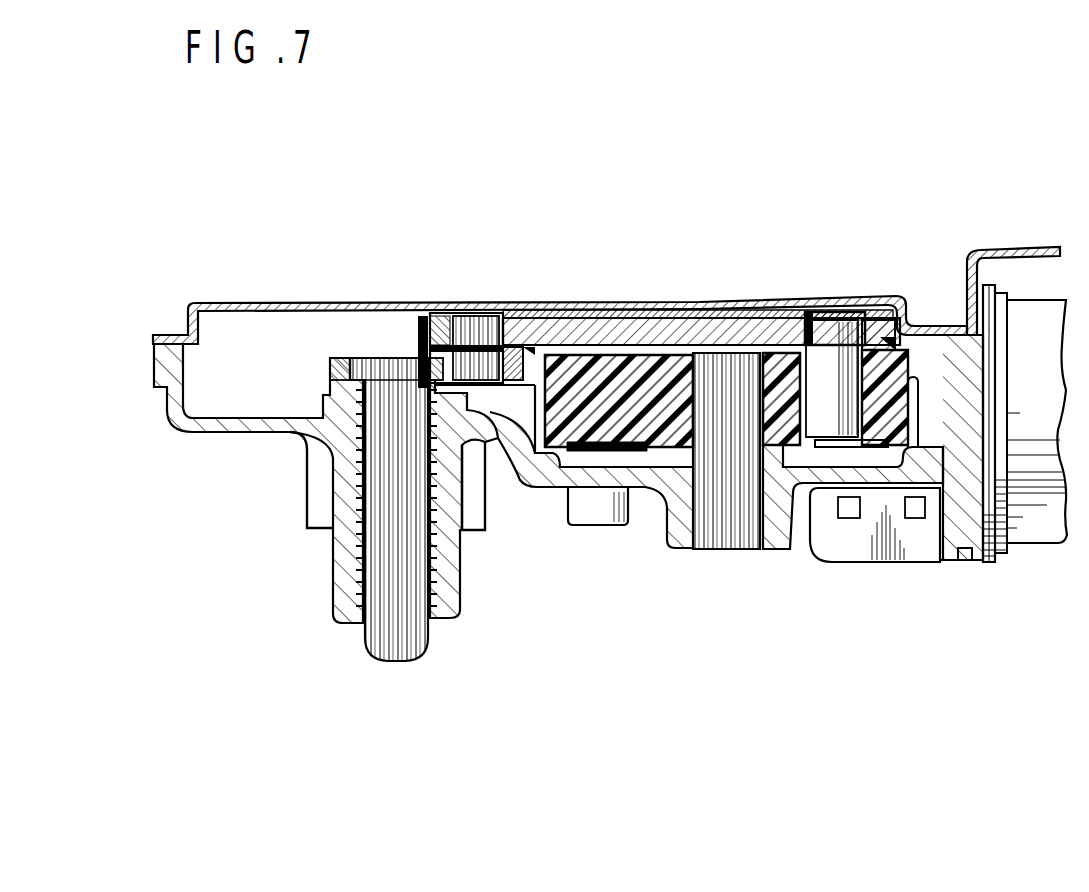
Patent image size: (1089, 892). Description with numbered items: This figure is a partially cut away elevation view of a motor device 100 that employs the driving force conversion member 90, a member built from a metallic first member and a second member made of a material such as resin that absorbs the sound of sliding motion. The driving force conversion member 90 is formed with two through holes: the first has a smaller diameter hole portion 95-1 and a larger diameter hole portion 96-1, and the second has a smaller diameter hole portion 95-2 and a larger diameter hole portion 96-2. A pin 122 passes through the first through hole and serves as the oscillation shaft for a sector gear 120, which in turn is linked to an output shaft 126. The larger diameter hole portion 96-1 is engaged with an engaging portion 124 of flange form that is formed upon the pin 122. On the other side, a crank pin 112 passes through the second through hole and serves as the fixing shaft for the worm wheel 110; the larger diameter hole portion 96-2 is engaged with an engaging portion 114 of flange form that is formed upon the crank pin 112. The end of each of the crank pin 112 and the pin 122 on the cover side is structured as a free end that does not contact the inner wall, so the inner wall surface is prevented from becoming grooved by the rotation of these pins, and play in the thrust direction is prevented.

The motor device 100 is at (215, 303).
The sector gear 120 is at (338, 355).
The pin 122 is at (468, 316).
The engaging portion 124 is at (490, 320).
The smaller diameter hole portion 95-1 is at (512, 316).
The driving force conversion member 90 is at (597, 310).
The crank pin 112 is at (820, 318).
The smaller diameter hole portion 95-2 is at (850, 320).
The engaging portion 114 is at (840, 322).
The worm wheel 110 is at (928, 330).
The output shaft 126 is at (387, 562).
The larger diameter hole portion 96-1 is at (513, 380).
The larger diameter hole portion 96-2 is at (767, 473).